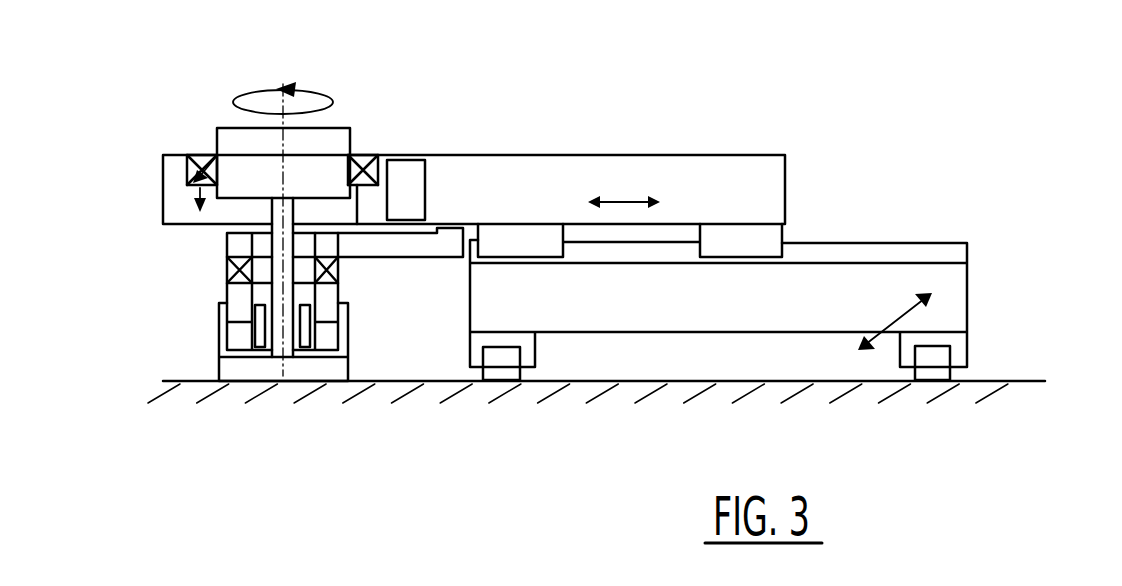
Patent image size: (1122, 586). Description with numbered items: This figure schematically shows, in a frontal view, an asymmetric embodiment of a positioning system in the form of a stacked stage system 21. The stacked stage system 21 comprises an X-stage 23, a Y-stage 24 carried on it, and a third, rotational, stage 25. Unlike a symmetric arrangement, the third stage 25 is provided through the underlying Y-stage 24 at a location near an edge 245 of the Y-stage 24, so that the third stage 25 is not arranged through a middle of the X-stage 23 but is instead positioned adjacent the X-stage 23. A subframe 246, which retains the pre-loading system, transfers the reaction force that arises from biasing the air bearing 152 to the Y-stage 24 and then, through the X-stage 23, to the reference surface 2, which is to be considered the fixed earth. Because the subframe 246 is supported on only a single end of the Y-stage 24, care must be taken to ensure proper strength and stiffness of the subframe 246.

The reference surface 2 is at (178, 290).
The stacked stage system 21 is at (998, 136).
The X-stage 23 is at (953, 297).
The Y-stage 24 is at (767, 190).
The third stage 25 is at (233, 148).
The edge 245 is at (172, 190).
The subframe 246 is at (368, 247).
The air bearing 152 is at (265, 367).